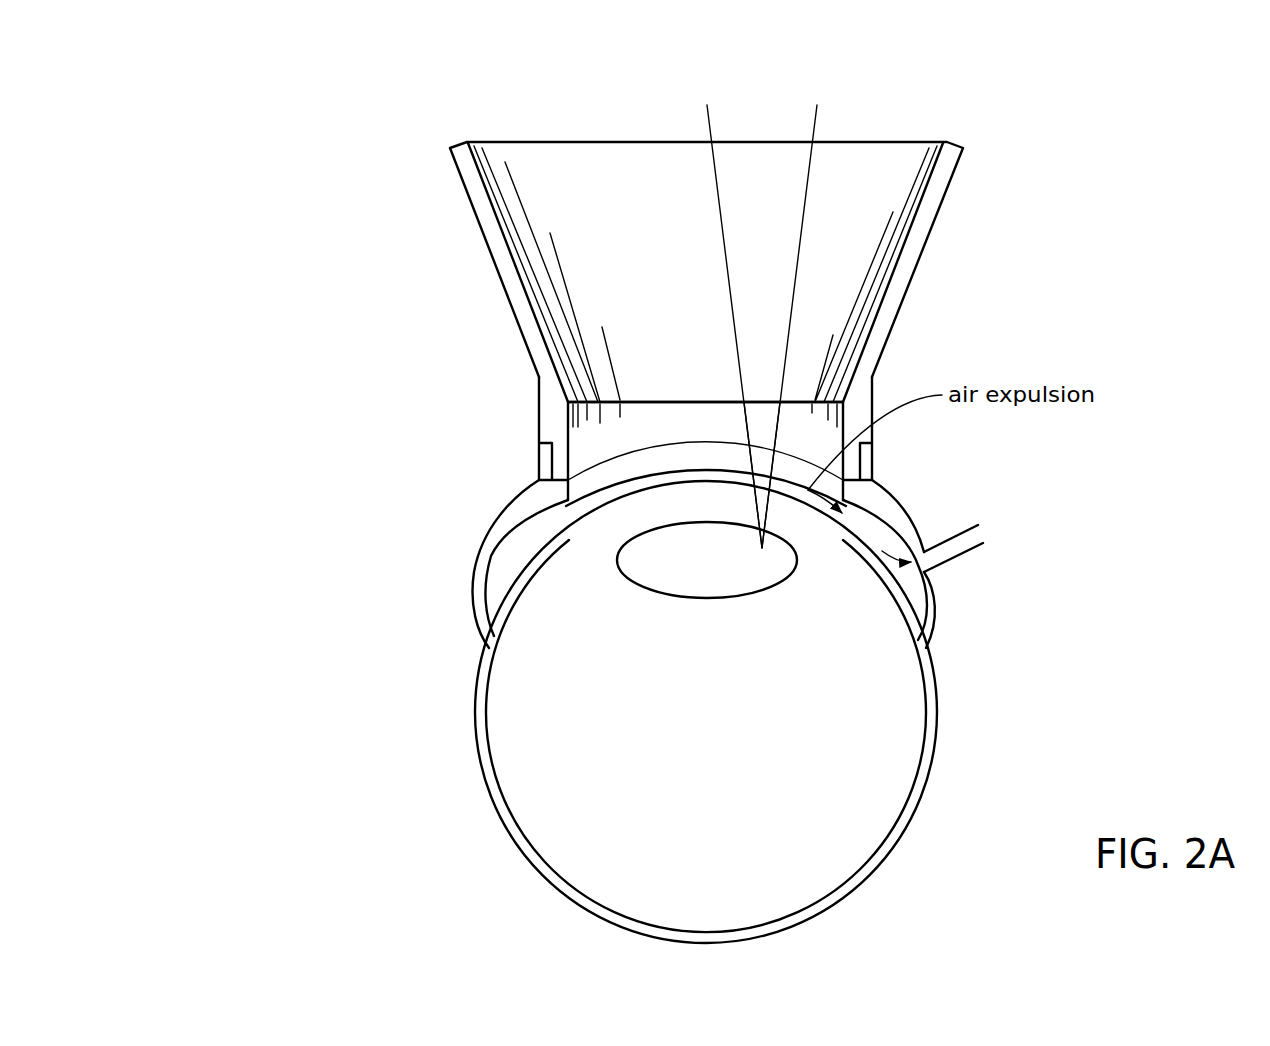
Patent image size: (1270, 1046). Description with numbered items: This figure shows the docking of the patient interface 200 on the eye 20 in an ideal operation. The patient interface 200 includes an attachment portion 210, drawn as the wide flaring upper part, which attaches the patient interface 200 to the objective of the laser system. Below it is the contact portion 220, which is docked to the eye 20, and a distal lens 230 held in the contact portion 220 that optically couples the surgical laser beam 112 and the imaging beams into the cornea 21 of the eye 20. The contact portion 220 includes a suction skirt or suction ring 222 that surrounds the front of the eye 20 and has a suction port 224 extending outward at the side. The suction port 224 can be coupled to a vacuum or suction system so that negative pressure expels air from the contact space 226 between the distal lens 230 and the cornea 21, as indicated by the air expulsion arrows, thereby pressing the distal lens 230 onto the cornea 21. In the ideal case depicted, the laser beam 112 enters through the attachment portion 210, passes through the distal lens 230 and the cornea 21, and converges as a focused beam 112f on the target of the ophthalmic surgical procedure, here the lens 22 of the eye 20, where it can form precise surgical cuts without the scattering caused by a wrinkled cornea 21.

The patient interface 200 is at (425, 114).
The attachment portion 210 is at (459, 256).
The contact portion 220 is at (520, 460).
The distal lens 230 is at (658, 445).
The contact space 226 is at (552, 507).
The suction skirt or suction ring 222 is at (474, 610).
The suction port 224 is at (958, 553).
The eye 20 is at (598, 680).
The cornea 21 is at (655, 490).
The lens of the eye 22 is at (649, 598).
The surgical laser beam 112 is at (817, 122).
The focused beam 112f is at (765, 550).